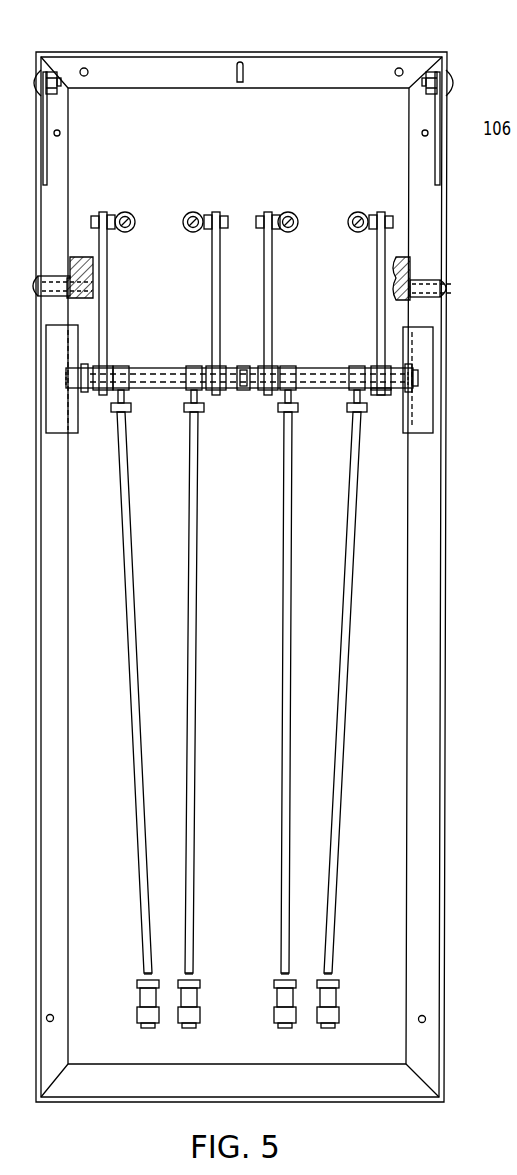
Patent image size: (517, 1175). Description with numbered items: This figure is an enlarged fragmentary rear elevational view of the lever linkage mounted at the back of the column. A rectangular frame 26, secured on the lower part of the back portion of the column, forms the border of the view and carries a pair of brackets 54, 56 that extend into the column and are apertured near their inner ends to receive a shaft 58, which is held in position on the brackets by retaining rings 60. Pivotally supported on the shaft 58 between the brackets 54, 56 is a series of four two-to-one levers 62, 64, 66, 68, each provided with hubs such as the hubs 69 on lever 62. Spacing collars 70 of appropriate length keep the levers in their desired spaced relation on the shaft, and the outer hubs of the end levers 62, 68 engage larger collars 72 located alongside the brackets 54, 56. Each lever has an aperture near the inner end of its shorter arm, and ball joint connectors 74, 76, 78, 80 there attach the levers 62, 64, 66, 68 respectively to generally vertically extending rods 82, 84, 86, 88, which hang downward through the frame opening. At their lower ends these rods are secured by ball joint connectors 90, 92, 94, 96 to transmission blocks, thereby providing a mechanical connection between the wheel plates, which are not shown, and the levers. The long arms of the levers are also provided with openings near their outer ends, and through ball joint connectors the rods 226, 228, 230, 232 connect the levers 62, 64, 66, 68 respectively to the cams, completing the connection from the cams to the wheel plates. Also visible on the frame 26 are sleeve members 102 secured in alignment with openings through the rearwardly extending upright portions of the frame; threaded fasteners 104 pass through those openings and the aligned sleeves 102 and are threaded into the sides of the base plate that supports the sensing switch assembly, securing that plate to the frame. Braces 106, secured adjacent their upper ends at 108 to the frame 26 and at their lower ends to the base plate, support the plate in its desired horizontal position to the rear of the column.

The rectangular frame 26 is at (417, 109).
The bracket 54 is at (50, 370).
The bracket 56 is at (424, 342).
The shaft 58 is at (418, 376).
The retaining ring 60 is at (70, 395).
The lever 62 is at (377, 252).
The lever 64 is at (272, 256).
The lever 66 is at (220, 268).
The lever 68 is at (107, 257).
The hub 69 is at (390, 395).
The spacing collar 70 is at (161, 388).
The larger collar 72 is at (83, 370).
The ball joint connector 74 is at (353, 412).
The ball joint connector 76 is at (283, 412).
The ball joint connector 78 is at (189, 412).
The ball joint connector 80 is at (118, 412).
The generally vertically extending rod 82 is at (353, 538).
The generally vertically extending rod 84 is at (291, 540).
The generally vertically extending rod 86 is at (197, 537).
The generally vertically extending rod 88 is at (131, 537).
The ball joint connector 90 is at (334, 996).
The ball joint connector 92 is at (282, 996).
The ball joint connector 94 is at (191, 995).
The ball joint connector 96 is at (145, 995).
The sleeve member 102 is at (62, 274).
The threaded fastener 104 is at (35, 304).
The brace 106 is at (47, 140).
The upper brace attachment 108 is at (30, 84).
The rod 226 is at (362, 212).
The rod 228 is at (292, 212).
The rod 230 is at (197, 212).
The rod 232 is at (128, 212).